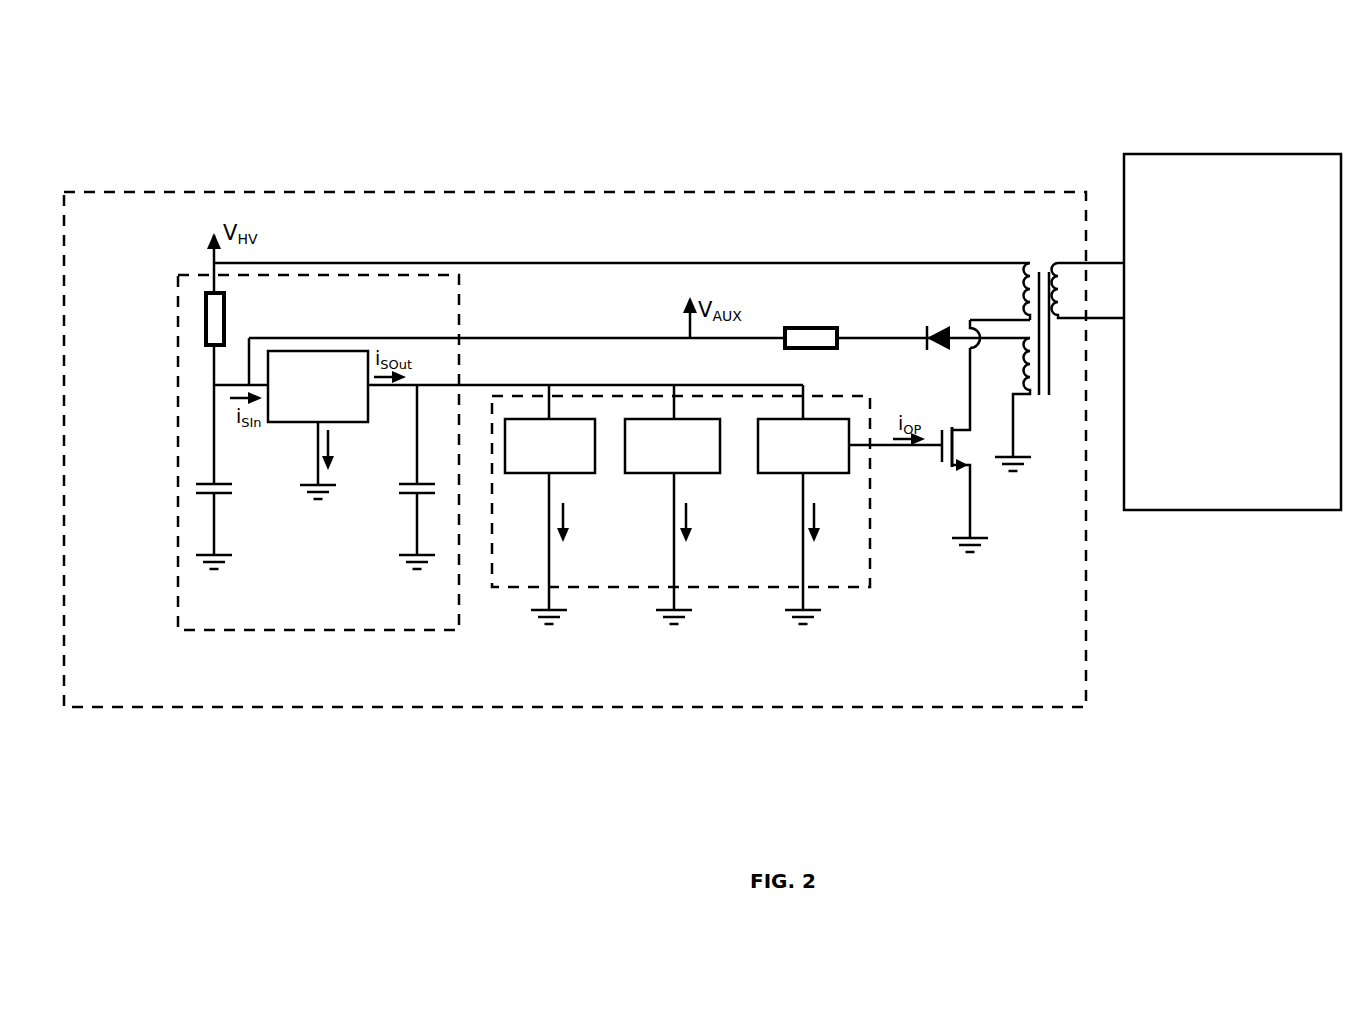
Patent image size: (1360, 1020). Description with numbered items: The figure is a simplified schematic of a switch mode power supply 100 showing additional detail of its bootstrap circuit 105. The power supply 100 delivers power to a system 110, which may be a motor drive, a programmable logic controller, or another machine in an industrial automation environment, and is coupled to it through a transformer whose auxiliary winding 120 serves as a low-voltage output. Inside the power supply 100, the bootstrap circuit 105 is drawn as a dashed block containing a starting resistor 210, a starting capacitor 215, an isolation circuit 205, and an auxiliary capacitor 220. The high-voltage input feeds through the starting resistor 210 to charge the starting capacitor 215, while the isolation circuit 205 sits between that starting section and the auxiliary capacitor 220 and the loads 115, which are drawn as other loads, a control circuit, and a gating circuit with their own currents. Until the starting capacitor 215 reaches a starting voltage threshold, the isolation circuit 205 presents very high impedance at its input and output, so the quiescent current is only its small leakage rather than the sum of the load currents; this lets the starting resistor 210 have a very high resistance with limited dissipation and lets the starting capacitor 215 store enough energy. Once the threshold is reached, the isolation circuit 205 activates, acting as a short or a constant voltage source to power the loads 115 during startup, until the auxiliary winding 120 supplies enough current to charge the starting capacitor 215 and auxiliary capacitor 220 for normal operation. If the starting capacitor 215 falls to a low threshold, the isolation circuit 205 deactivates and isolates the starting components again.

The power supply 100 is at (270, 191).
The bootstrap circuit 105 is at (177, 385).
The system 110 is at (1211, 154).
The loads 115 is at (510, 588).
The auxiliary winding 120 is at (1030, 398).
The isolation circuit 205 is at (368, 414).
The starting resistor 210 is at (224, 322).
The starting capacitor 215 is at (225, 497).
The auxiliary capacitor 220 is at (405, 497).